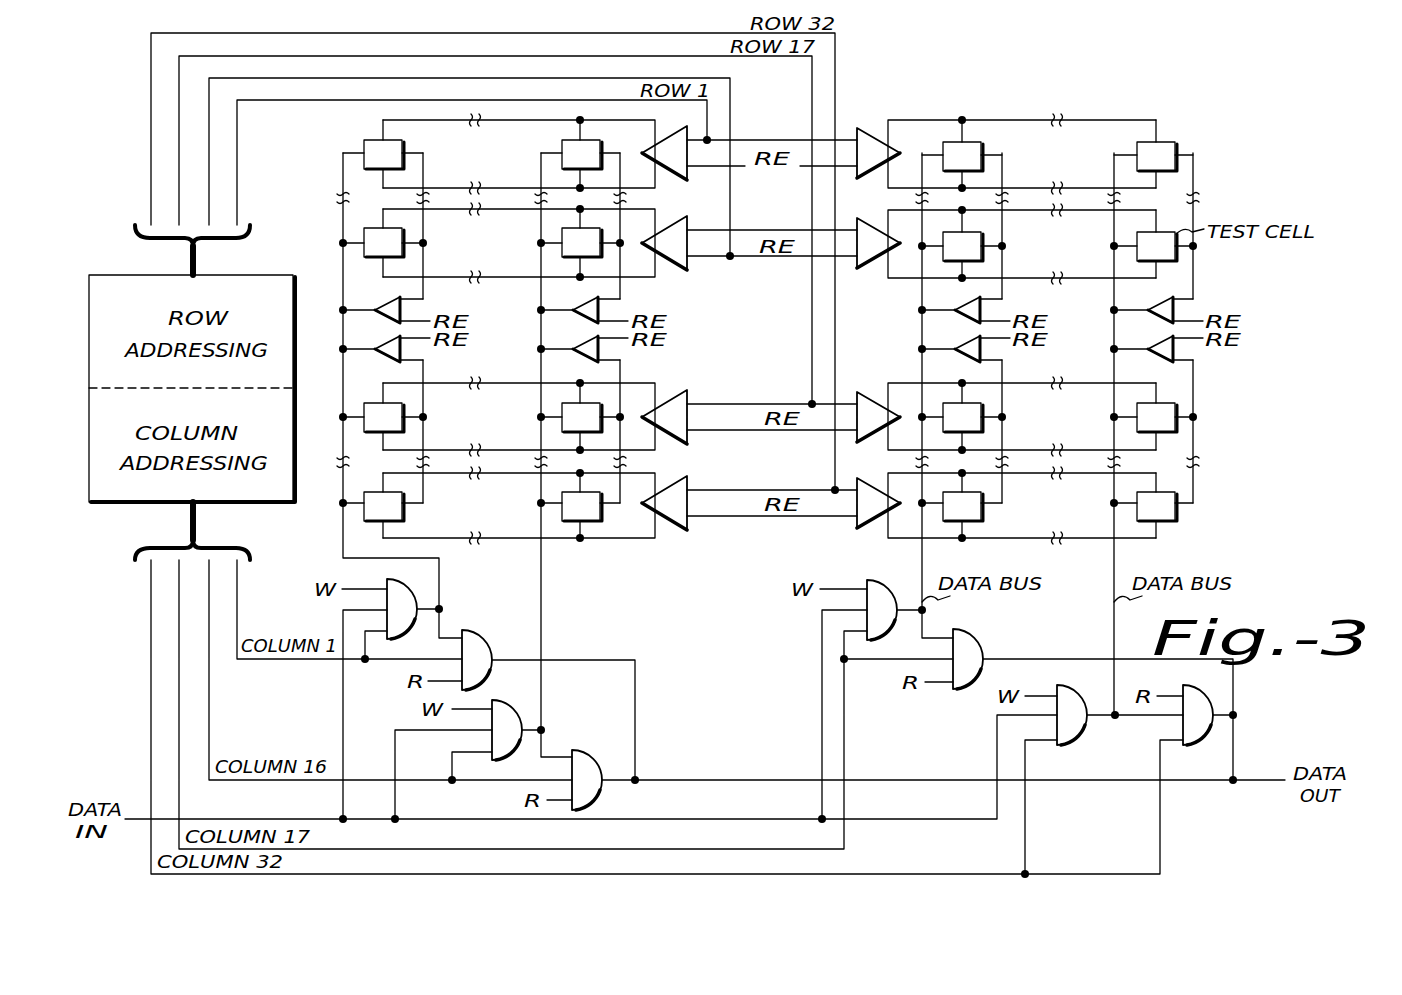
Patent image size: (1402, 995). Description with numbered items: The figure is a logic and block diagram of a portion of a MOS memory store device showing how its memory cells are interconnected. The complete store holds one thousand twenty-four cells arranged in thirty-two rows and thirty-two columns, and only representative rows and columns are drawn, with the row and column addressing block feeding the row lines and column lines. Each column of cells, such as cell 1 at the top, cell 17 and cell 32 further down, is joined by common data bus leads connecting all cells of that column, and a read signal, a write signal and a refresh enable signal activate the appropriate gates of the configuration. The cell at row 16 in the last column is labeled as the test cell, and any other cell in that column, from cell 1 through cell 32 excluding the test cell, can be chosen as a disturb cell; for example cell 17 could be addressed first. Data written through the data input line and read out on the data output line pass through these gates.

The cell 1 is at (1172, 143).
The cell 17 is at (1175, 412).
The cell 32 is at (1175, 494).
The row 16 is at (474, 159).